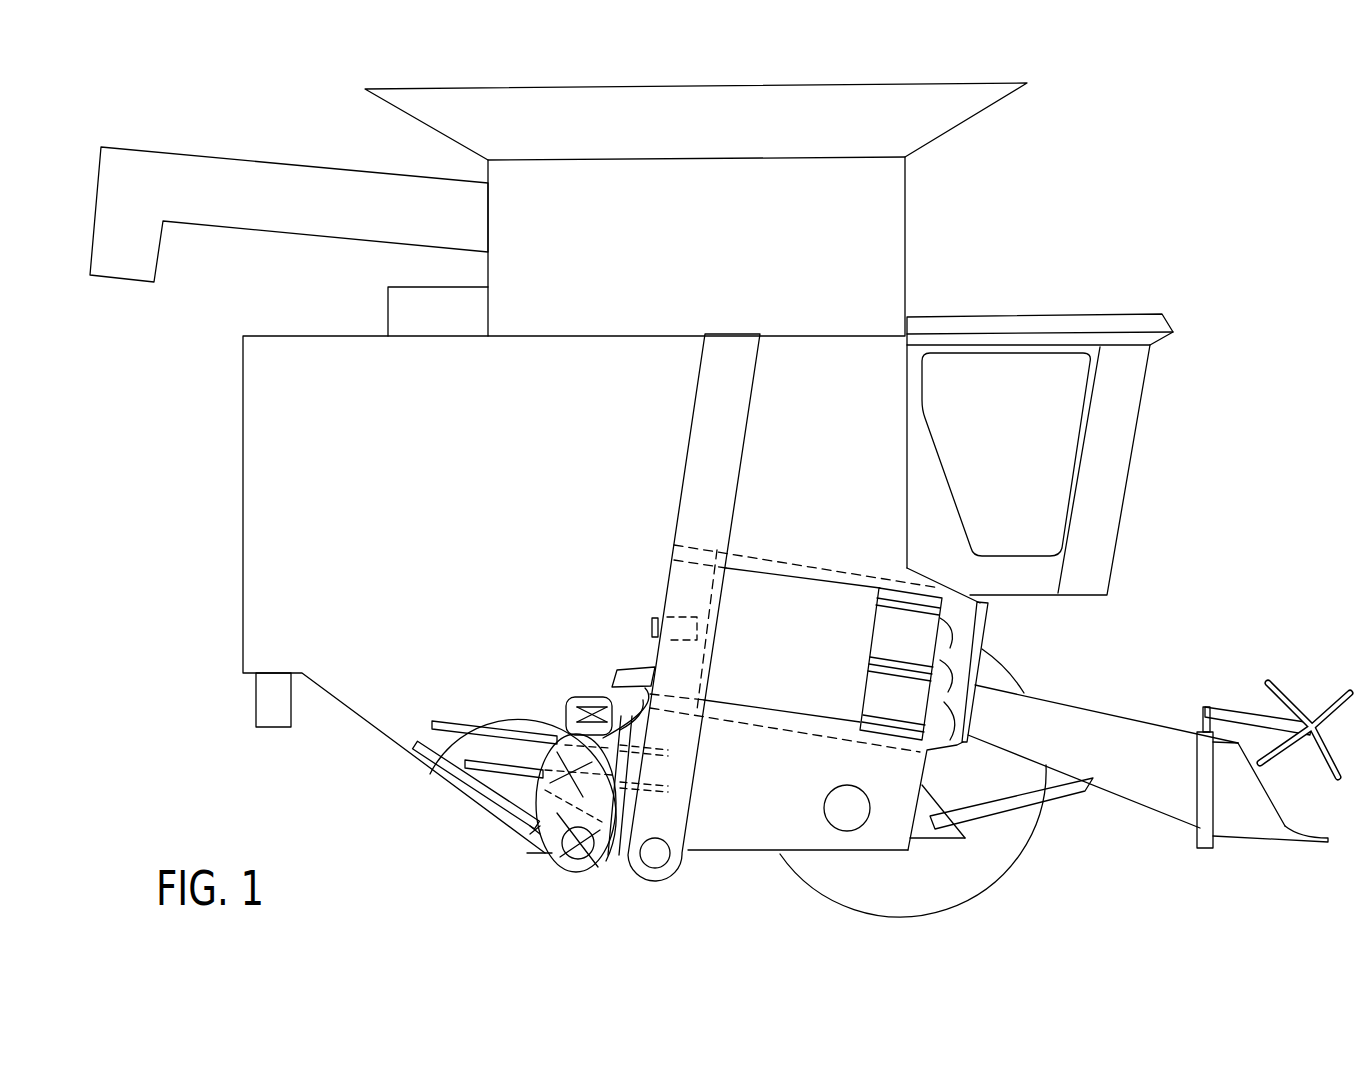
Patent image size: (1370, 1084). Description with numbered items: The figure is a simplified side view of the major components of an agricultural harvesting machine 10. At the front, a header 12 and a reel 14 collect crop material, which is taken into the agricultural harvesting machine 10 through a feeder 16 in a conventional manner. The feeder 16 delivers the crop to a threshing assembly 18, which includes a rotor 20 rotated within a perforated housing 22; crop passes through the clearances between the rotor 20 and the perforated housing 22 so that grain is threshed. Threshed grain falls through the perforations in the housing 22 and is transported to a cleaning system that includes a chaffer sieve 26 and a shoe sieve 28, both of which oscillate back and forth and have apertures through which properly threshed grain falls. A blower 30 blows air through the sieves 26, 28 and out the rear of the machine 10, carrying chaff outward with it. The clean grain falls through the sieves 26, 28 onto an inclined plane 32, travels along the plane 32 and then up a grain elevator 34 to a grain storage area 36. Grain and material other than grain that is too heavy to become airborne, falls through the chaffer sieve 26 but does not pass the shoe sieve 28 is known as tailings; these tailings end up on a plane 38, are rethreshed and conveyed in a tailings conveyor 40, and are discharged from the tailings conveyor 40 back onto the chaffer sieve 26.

The agricultural harvesting machine 10 is at (1265, 453).
The header 12 is at (1240, 825).
The reel 14 is at (1323, 708).
The feeder 16 is at (1078, 723).
The threshing assembly 18 is at (798, 580).
The rotor 20 is at (928, 635).
The perforated housing 22 is at (857, 570).
The chaffer sieve 26 is at (453, 720).
The shoe sieve 28 is at (512, 765).
The blower 30 is at (870, 808).
The inclined plane 32 is at (535, 830).
The grain elevator 34 is at (705, 462).
The grain storage area 36 is at (930, 113).
The plane 38 is at (460, 803).
The tailings conveyor 40 is at (580, 872).